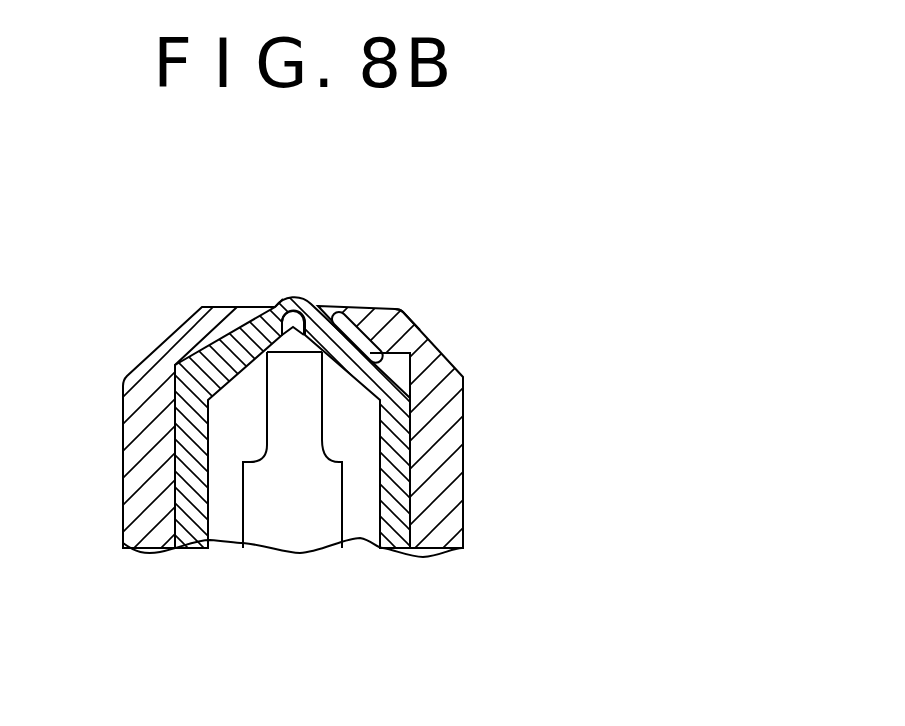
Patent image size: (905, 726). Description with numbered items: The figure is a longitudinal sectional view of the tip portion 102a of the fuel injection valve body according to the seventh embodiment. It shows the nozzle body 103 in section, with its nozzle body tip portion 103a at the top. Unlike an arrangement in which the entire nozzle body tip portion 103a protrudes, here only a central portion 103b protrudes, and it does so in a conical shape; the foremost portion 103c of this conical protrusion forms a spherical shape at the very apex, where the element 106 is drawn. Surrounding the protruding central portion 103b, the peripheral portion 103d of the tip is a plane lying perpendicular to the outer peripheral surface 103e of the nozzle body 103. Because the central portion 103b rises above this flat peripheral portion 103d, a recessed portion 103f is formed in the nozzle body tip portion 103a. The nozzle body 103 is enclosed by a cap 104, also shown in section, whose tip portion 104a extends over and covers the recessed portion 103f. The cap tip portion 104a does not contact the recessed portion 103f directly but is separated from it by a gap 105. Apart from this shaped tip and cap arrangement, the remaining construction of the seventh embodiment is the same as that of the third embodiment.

The tip portion of the fuel injection valve body 102a is at (147, 296).
The nozzle body 103 is at (395, 552).
The nozzle body tip portion 103a is at (233, 306).
The central portion 103b is at (338, 306).
The foremost portion 103c is at (283, 297).
The peripheral portion 103d is at (413, 395).
The outer peripheral surface 103e is at (412, 444).
The recessed portion 103f is at (418, 343).
The cap 104 is at (445, 552).
The tip portion of the cap 104a is at (405, 319).
The gap 105 is at (377, 308).
The orifice 106 is at (310, 295).